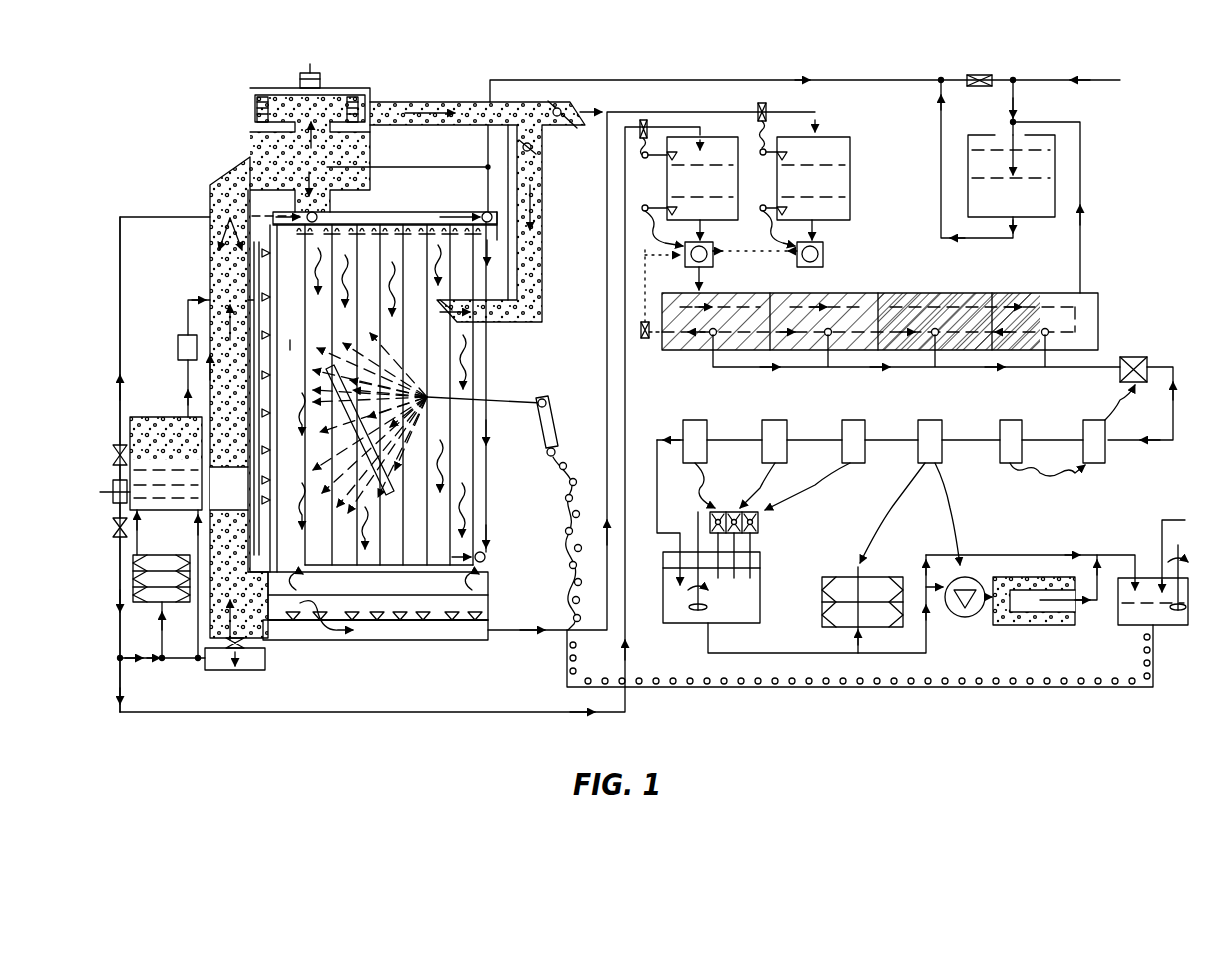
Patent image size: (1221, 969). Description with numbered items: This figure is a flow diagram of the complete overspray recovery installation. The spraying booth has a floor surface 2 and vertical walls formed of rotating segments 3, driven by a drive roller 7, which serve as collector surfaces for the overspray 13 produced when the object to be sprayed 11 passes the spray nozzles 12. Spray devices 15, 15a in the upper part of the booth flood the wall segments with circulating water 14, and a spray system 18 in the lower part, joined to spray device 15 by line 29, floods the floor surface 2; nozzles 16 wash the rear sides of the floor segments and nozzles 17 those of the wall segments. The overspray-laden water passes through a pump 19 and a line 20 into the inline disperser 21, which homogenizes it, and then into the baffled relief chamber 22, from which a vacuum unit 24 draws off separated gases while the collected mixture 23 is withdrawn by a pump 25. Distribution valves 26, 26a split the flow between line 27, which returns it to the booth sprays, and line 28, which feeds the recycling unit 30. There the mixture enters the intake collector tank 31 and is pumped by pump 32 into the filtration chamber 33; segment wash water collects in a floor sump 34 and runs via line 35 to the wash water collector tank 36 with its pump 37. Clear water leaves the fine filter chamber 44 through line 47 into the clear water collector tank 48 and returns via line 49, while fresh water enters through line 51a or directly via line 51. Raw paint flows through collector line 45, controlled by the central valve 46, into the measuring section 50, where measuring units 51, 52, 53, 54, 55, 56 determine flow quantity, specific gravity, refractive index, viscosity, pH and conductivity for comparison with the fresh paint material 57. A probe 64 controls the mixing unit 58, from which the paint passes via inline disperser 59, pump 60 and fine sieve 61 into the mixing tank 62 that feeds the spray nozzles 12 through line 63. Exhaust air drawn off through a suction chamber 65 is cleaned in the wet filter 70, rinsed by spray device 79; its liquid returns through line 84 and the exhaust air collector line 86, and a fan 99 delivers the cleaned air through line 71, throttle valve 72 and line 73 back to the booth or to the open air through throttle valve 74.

The floor surface 2 is at (412, 570).
The rotating segments 3 is at (292, 263).
The drive roller 7 is at (490, 360).
The object to be sprayed 11 is at (392, 496).
The spray nozzles 12 is at (532, 398).
The overspray 13 is at (352, 318).
The circulating water 14 is at (306, 292).
The spray device 15 is at (482, 213).
The spray device 15a is at (395, 214).
The nozzles for cleaning the floor segments 16 is at (355, 622).
The nozzles for cleaning the vertical segments 17 is at (252, 262).
The spray system 18 is at (485, 552).
The pump 19 is at (226, 672).
The line 20 is at (160, 627).
The inline disperser 21 is at (133, 575).
The relief chamber 22 is at (162, 418).
The liquid 23 is at (163, 510).
The vacuum unit 24 is at (177, 347).
The pump 25 is at (100, 493).
The distribution valve 26 is at (112, 455).
The distribution valve 26a is at (112, 528).
The line 27 is at (275, 212).
The line 28 is at (120, 684).
The line 29 is at (488, 452).
The recycling unit 30 is at (860, 102).
The intake collector tank 31 is at (672, 168).
The pump 32 is at (712, 264).
The filtration chamber 33 is at (882, 290).
The floor sump 34 is at (328, 640).
The line 35 is at (513, 640).
The wash water collector tank 36 is at (850, 192).
The pump 37 is at (823, 257).
The fine filter chamber 44 is at (1020, 290).
The collector line 45 is at (920, 368).
The central valve 46 is at (1135, 356).
The line 47 is at (1083, 200).
The clear water collector tank 48 is at (978, 130).
The line 49 is at (941, 195).
The measuring section 50 is at (890, 438).
The fresh water line 51 is at (1055, 80).
The line 51a is at (1015, 96).
The measuring unit 52 is at (1012, 420).
The measuring unit 53 is at (945, 420).
The measuring unit 54 is at (850, 420).
The measuring unit 55 is at (773, 420).
The measuring unit 56 is at (692, 420).
The fresh paint material 57 is at (1180, 545).
The mixing unit 58 is at (762, 565).
The inline disperser 59 is at (830, 627).
The pump 60 is at (963, 617).
The fine sieve 61 is at (1040, 627).
The mixing tank 62 is at (1165, 625).
The line 63 is at (822, 688).
The probe 64 is at (760, 518).
The suction chamber 65 is at (215, 618).
The wet filter 70 is at (246, 150).
The line 71 is at (398, 101).
The throttle valve 72 is at (531, 148).
The line 73 is at (536, 298).
The throttle valve 74 is at (560, 108).
The spray device 79 is at (383, 166).
The line 84 is at (345, 211).
The exhaust air collector line 86 is at (218, 290).
The fan 99 is at (290, 108).